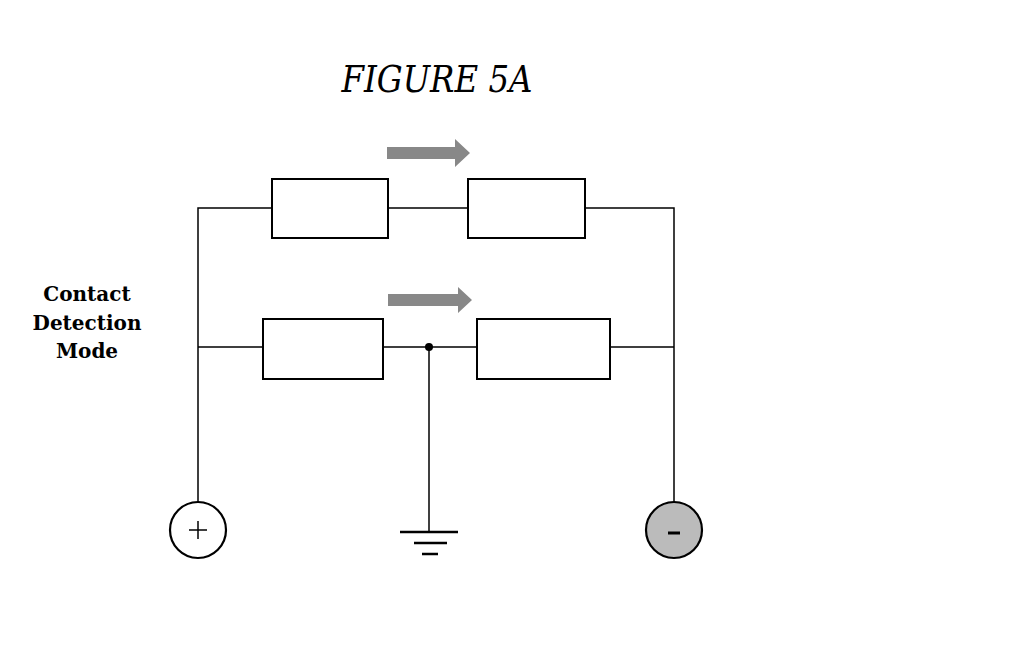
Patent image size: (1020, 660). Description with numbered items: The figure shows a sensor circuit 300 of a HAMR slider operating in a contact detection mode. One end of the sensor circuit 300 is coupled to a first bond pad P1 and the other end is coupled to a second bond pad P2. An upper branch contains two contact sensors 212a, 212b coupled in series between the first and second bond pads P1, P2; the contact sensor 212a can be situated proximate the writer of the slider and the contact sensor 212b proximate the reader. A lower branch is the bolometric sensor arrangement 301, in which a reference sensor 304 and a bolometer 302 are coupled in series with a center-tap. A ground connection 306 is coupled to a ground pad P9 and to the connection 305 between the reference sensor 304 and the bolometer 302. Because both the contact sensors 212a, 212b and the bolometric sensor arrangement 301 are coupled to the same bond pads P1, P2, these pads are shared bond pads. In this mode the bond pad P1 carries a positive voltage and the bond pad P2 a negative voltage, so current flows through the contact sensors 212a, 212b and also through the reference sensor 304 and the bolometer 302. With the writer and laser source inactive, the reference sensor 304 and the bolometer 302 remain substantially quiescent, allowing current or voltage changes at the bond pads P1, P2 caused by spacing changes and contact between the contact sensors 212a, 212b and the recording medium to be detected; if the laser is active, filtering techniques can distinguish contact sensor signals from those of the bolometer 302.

The sensor circuit 300 is at (160, 170).
The bolometric sensor arrangement 301 is at (703, 296).
The contact sensor 212a is at (330, 178).
The contact sensor 212b is at (530, 178).
The reference sensor 304 is at (318, 318).
The bolometer 302 is at (540, 318).
The connection 305 is at (432, 351).
The ground connection 306 is at (429, 455).
The first bond pad P1 is at (226, 530).
The second bond pad P2 is at (646, 528).
The ground pad P9 is at (410, 543).